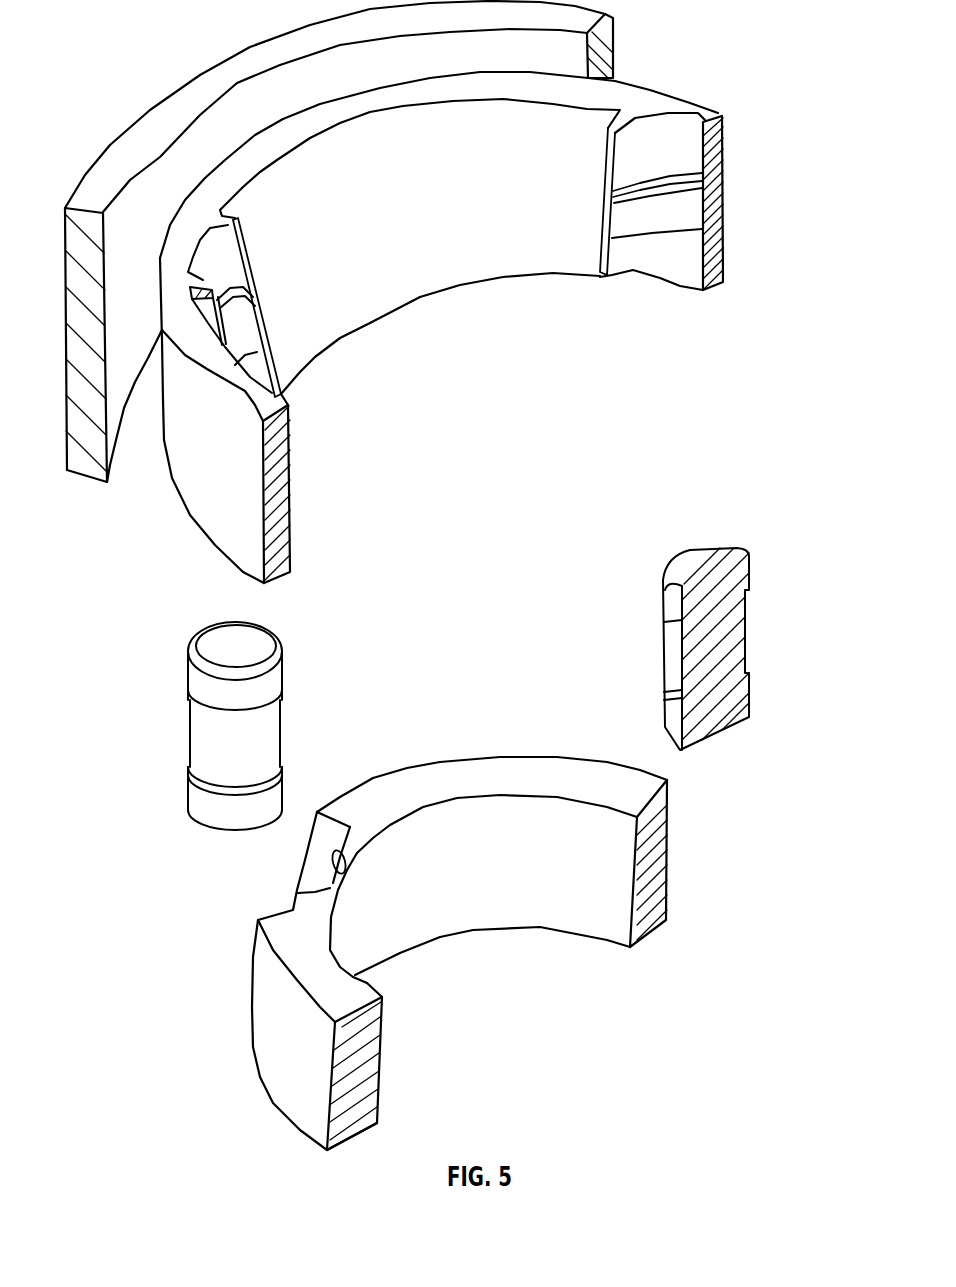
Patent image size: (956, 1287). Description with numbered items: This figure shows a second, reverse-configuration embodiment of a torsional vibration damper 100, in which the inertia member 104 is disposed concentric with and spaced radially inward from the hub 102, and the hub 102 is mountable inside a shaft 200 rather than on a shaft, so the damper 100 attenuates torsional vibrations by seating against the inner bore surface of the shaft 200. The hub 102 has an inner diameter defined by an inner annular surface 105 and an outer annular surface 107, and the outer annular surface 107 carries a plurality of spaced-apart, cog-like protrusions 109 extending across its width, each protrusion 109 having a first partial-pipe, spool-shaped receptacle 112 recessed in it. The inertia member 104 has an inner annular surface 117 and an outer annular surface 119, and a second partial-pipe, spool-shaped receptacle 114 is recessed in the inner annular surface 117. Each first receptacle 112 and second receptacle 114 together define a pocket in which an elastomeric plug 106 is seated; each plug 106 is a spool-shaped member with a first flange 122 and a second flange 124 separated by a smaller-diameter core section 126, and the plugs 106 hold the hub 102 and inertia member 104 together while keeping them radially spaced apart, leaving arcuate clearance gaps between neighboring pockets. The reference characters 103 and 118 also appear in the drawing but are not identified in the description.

The torsional vibration damper 100 is at (660, 74).
The shaft 200 is at (147, 133).
The hub 102 is at (289, 490).
The inner edge of first ring segment 103 is at (424, 291).
The inertia member 104 is at (464, 778).
The inner annular surface 105 is at (235, 469).
The elastomeric plug 106 is at (207, 640).
The outer annular surface 107 is at (468, 236).
The protrusion 109 is at (263, 322).
The first partial-pipe, spool-shaped receptacle 112 is at (228, 258).
The second partial-pipe, spool-shaped receptacle 114 is at (337, 875).
The inner annular surface 117 is at (520, 854).
The groove 118 is at (686, 206).
The outer annular surface 119 is at (314, 1066).
The first flange 122 is at (286, 676).
The second flange 124 is at (190, 793).
The core section 126 is at (190, 736).